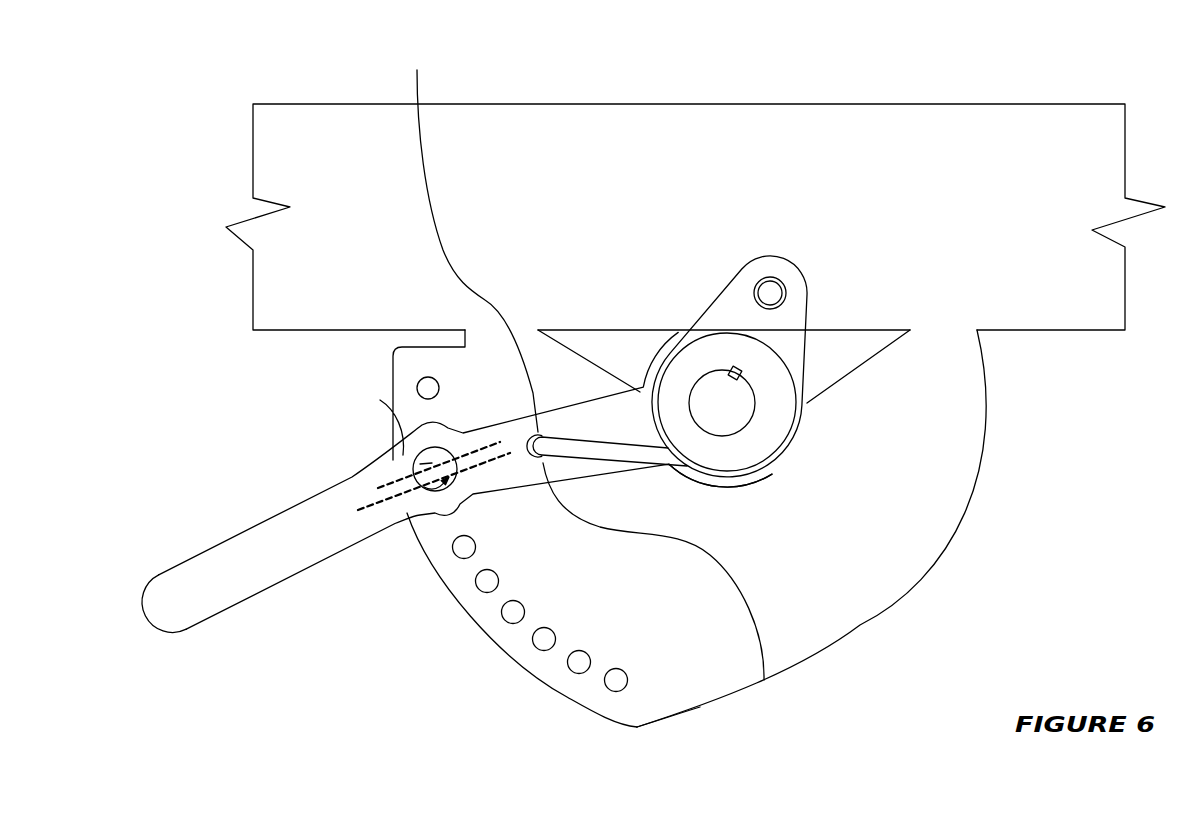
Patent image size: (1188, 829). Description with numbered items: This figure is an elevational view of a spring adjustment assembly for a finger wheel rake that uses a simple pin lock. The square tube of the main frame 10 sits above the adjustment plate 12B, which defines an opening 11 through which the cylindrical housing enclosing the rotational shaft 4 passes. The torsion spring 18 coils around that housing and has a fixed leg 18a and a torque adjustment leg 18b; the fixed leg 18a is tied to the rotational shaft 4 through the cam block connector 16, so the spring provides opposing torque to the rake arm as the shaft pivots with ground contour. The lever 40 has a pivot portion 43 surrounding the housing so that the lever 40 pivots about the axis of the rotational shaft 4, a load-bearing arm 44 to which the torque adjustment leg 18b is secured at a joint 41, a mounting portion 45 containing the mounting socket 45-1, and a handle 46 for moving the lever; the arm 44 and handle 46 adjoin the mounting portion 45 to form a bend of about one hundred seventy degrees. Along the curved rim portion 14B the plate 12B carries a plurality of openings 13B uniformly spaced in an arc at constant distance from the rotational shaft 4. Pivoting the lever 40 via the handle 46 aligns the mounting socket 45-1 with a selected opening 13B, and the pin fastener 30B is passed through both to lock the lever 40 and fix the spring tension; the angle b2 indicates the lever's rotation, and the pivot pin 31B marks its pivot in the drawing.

The main frame 10 is at (644, 198).
The torque adjustment leg 18b is at (467, 239).
The fixed leg 18a is at (769, 292).
The cam block connector 16 is at (732, 346).
The torsion spring 18 is at (793, 443).
The rotational shaft 4 is at (715, 416).
The load-bearing arm 44 is at (606, 434).
The handle 46 is at (241, 578).
The mounting portion 45 is at (380, 400).
The pivot pin 31B is at (393, 460).
The mounting socket 45-1 is at (430, 463).
The lever 40 is at (242, 520).
The pin fastener 30B is at (418, 498).
The rotation angle b2 is at (436, 490).
The adjustment plate 12B is at (624, 616).
The opening 11 is at (843, 350).
The curved rim portion 14B is at (601, 718).
The joint 41 is at (663, 588).
The pivot portion 43 is at (770, 480).
The openings 13B is at (567, 663).